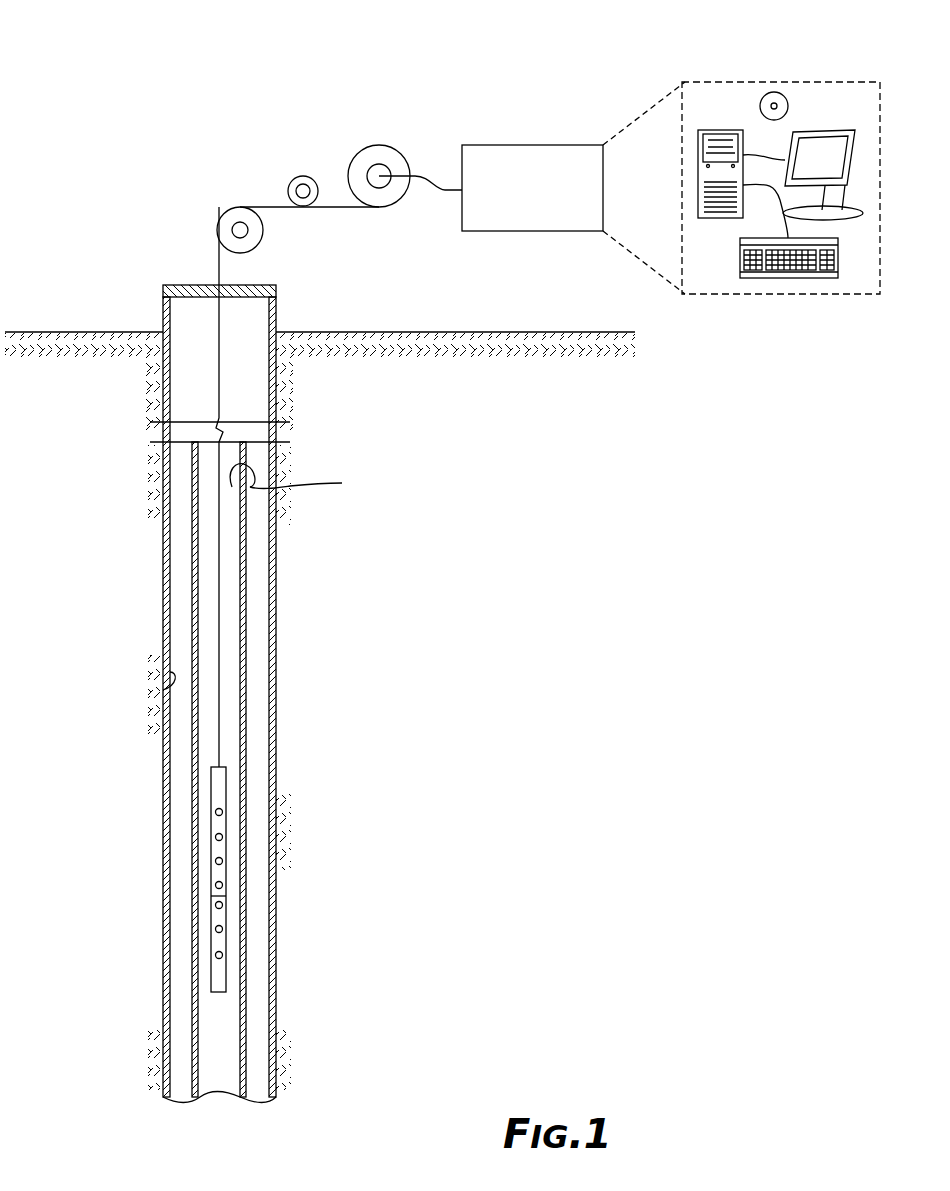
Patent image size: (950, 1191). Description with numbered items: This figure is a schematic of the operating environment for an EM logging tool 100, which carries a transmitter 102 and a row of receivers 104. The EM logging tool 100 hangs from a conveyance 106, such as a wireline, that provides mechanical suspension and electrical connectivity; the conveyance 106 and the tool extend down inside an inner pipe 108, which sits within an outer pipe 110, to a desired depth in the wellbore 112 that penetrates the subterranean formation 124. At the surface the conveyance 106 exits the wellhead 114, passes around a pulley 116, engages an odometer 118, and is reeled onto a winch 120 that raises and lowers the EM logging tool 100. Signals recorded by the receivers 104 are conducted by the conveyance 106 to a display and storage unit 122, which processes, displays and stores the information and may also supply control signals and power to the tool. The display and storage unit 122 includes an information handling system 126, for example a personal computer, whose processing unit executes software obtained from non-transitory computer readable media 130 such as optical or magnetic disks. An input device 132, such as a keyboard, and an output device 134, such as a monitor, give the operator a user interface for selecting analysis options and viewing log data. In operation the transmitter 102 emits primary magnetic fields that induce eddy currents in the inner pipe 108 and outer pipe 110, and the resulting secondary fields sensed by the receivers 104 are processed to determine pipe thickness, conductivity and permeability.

The EM logging tool 100 is at (228, 772).
The transmitter 102 is at (223, 812).
The receivers 104 is at (223, 837).
The conveyance 106 is at (225, 745).
The inner pipe 108 is at (288, 769).
The outer pipe 110 is at (276, 551).
The wellbore 112 is at (163, 703).
The wellhead 114 is at (276, 291).
The pulley 116 is at (232, 208).
The odometer 118 is at (303, 176).
The winch 120 is at (385, 146).
The display and storage unit 122 is at (547, 200).
The subterranean formation 124 is at (371, 660).
The information handling system 126 is at (730, 82).
The non-transitory computer readable media 130 is at (776, 92).
The input device 132 is at (800, 278).
The output device 134 is at (712, 130).